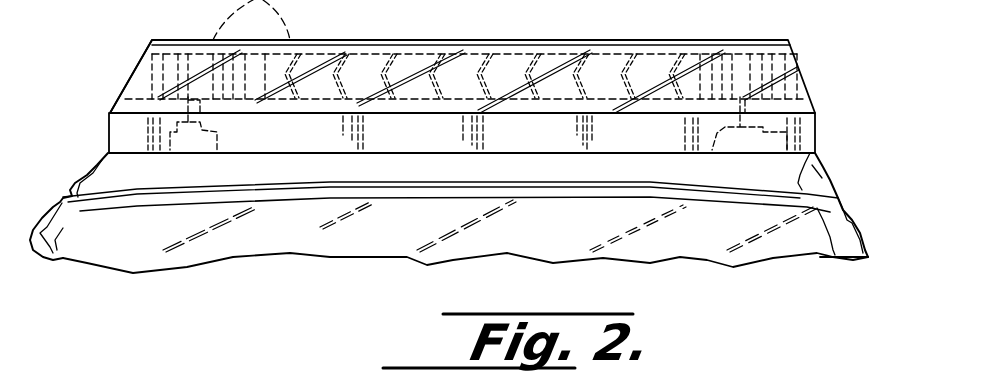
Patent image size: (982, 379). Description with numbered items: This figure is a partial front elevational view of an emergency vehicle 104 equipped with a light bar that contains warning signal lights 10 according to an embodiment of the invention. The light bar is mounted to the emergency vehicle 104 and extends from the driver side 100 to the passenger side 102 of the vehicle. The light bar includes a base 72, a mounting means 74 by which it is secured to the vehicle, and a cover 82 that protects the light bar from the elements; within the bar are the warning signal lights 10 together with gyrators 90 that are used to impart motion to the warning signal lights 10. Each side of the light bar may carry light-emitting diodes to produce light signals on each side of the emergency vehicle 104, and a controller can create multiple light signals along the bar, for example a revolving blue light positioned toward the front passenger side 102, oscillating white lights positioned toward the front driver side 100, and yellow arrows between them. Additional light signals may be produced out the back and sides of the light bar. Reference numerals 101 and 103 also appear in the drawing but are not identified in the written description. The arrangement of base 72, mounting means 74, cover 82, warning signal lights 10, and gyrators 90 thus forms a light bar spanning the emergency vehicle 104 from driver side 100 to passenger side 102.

The warning signal light 10 is at (807, 62).
The base 72 is at (220, 153).
The mounting means 74 is at (822, 170).
The cover 82 is at (147, 42).
The gyrator 90 is at (815, 125).
The driver side 100 is at (868, 238).
The top cover 101 is at (742, 40).
The passenger side 102 is at (38, 233).
The side wall 103 is at (128, 77).
The emergency vehicle 104 is at (247, 237).